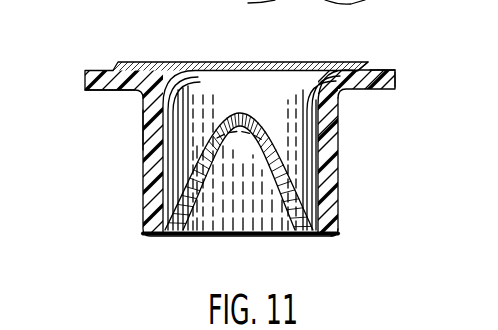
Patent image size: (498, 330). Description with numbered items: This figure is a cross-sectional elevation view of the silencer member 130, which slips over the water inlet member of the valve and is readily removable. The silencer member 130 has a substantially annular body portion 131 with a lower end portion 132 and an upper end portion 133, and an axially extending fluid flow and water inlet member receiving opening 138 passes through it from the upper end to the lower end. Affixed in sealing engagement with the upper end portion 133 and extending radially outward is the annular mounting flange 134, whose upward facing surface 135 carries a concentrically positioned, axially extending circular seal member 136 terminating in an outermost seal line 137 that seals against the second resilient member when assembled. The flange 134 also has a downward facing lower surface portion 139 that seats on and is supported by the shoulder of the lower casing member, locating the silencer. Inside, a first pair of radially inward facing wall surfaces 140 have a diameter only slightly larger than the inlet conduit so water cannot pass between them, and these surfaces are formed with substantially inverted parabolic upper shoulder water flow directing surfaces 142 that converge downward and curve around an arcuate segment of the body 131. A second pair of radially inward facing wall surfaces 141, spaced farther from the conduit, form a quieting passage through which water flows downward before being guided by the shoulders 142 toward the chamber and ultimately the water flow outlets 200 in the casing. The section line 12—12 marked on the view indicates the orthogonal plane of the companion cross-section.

The section line 12— 12 is at (68, 193).
The silencer member 130 is at (339, 128).
The annular body portion 131 is at (144, 127).
The lower end portion 132 is at (327, 238).
The upper end portion 133 is at (190, 68).
The annular mounting flange 134 is at (397, 78).
The axial outward facing surface 135 is at (396, 69).
The circular seal member 136 is at (371, 64).
The terminal seal line 137 is at (366, 65).
The water inlet member receiving opening 138 is at (286, 100).
The lower surface portion 139 is at (94, 92).
The first pair of radially inward facing wall surfaces 140 is at (227, 207).
The second pair of radially inward facing wall surfaces 141 is at (178, 96).
The inverted parabolic upper shoulder water flow directing surfaces 142 is at (215, 127).
The water flow outlets 200 is at (406, 0).